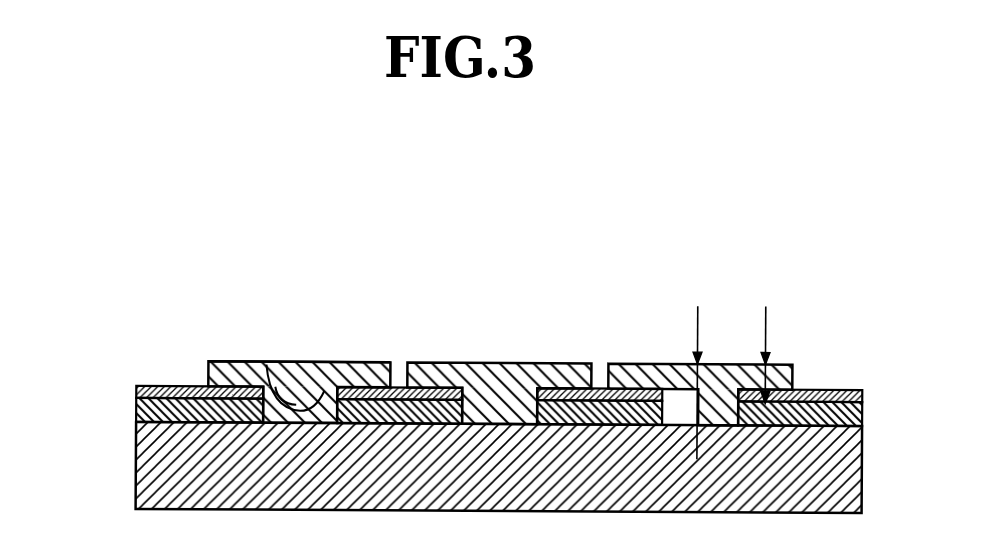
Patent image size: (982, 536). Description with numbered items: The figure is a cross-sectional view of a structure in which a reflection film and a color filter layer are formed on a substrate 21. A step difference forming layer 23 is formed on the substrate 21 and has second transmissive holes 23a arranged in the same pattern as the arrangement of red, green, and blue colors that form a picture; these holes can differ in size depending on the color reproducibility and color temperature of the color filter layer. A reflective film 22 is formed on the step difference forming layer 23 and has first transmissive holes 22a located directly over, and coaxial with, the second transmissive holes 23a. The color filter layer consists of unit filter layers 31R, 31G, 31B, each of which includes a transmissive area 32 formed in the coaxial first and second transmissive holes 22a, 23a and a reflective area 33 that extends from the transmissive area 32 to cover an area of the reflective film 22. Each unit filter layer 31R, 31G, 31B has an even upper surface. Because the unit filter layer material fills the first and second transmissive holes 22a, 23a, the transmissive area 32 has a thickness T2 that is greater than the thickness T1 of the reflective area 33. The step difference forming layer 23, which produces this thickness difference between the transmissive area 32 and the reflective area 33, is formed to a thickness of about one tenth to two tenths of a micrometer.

The substrate 21 is at (142, 473).
The reflective film 22 is at (180, 388).
The step difference forming layer 23 is at (137, 412).
The first transmissive holes 22a is at (267, 372).
The second transmissive holes 23a is at (305, 398).
The red unit filter layer 31R is at (288, 324).
The green unit filter layer 31G is at (497, 356).
The blue unit filter layer 31B is at (800, 356).
The transmissive area 32 is at (316, 402).
The reflective area 33 is at (374, 355).
The thickness of reflective area T1 is at (748, 354).
The thickness of transmissive area T2 is at (679, 382).